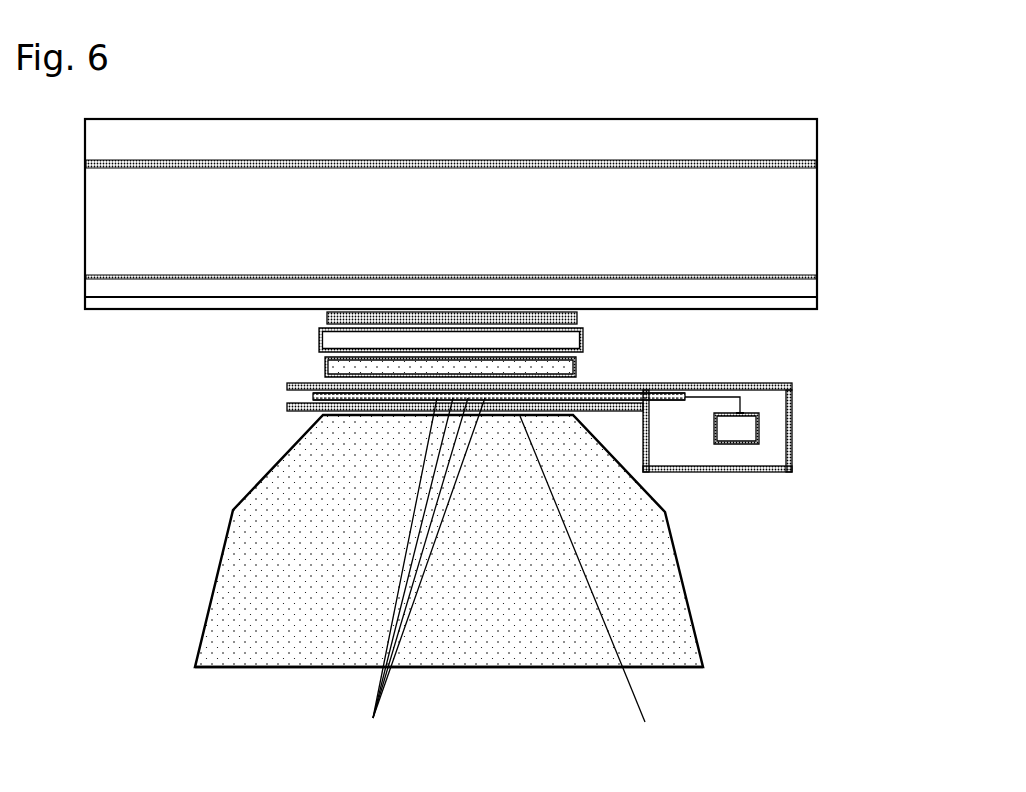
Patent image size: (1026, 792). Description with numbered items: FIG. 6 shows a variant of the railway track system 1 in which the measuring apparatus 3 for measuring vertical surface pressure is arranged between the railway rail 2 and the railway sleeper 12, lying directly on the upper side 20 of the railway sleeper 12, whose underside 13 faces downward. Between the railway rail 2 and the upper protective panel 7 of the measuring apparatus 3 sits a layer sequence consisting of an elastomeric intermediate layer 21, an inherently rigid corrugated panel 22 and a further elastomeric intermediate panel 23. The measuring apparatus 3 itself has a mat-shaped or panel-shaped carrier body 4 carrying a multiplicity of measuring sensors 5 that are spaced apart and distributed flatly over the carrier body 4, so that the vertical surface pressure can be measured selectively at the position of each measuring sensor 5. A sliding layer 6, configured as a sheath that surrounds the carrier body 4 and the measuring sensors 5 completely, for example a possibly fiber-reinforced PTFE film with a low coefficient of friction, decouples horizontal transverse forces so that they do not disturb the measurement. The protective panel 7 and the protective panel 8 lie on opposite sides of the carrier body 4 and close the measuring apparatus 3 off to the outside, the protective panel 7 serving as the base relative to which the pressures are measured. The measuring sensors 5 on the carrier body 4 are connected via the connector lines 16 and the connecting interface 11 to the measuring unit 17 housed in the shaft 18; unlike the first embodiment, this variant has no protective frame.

The ultrasonic sensor device 1 is at (485, 100).
The railway rail 2 is at (793, 238).
The elastomeric intermediate layer 21 is at (327, 318).
The inherently rigid corrugated panel 22 is at (319, 340).
The elastomeric intermediate panel 23 is at (325, 370).
The measuring apparatus 3 is at (608, 400).
The carrier body 4 is at (313, 398).
The measuring sensors 5 is at (424, 577).
The sliding layer 6 is at (313, 397).
The upper protective panel 7 is at (288, 388).
The protective panel 8 is at (308, 410).
The connecting interface 11 is at (745, 412).
The railway sleeper 12 is at (250, 570).
The underside 13 is at (506, 673).
The connector lines 16 is at (712, 397).
The measuring unit 17 is at (759, 424).
The shaft 18 is at (789, 400).
The upper side 20 is at (593, 586).